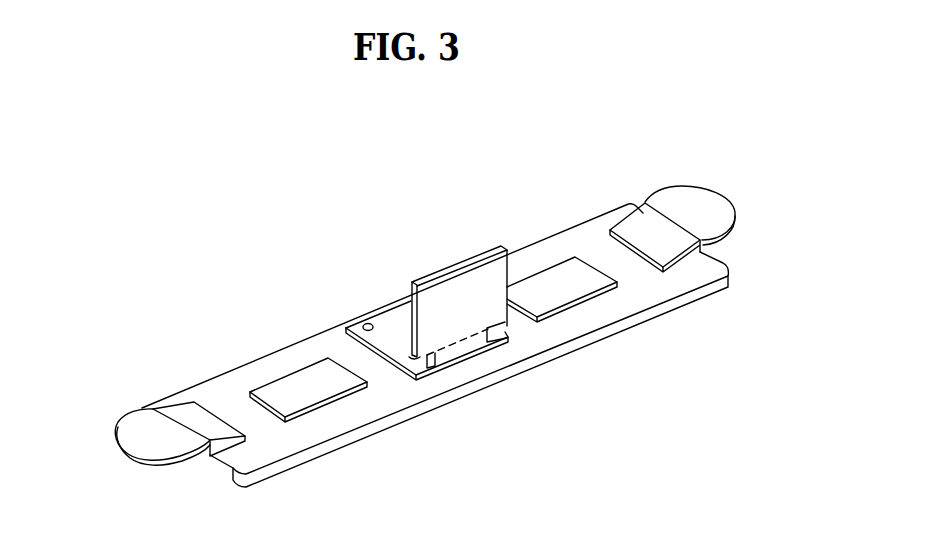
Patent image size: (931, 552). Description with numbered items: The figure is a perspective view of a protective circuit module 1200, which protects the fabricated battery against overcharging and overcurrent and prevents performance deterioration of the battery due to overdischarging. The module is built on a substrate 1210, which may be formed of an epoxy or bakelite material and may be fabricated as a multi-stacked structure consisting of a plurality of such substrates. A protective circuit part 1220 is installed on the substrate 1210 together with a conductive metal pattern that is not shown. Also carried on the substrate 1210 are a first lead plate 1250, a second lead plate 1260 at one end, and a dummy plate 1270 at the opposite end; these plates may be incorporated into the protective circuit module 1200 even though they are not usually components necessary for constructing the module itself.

The protective circuit module 1200 is at (125, 225).
The substrate 1210 is at (602, 224).
The protective circuit part 1220 is at (293, 382).
The first lead plate 1250 is at (398, 323).
The second lead plate 1260 is at (718, 203).
The dummy plate 1270 is at (128, 442).